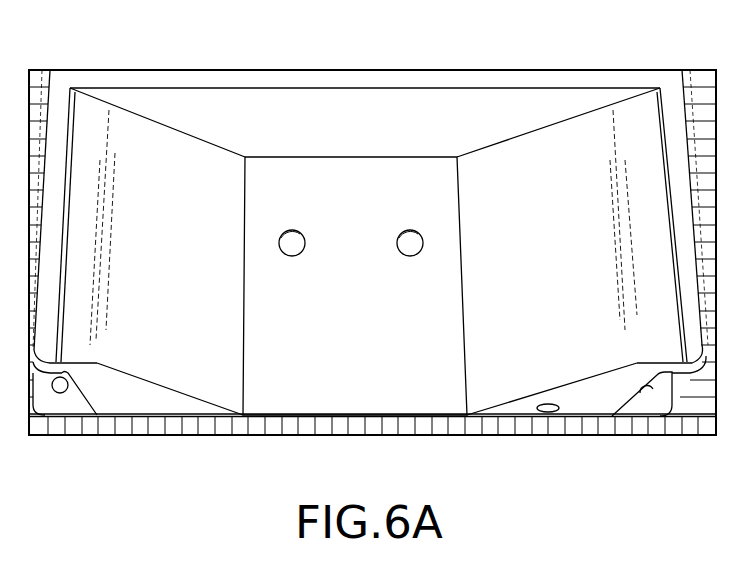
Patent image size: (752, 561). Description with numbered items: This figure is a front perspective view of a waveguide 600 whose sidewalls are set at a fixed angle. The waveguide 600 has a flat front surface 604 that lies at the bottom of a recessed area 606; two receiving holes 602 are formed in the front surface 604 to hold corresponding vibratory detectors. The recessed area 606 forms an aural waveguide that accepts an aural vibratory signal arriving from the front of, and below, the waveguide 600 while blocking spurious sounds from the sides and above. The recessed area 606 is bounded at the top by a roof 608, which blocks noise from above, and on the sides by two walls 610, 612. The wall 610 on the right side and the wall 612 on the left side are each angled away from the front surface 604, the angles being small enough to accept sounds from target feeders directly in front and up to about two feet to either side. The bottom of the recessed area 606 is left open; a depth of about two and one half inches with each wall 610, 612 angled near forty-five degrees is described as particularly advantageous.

The waveguide 600 is at (373, 83).
The receiving holes 602 is at (293, 246).
The front surface 604 is at (377, 372).
The recessed area 606 is at (450, 395).
The roof 608 is at (245, 98).
The wall 610 is at (597, 100).
The wall 612 is at (91, 98).